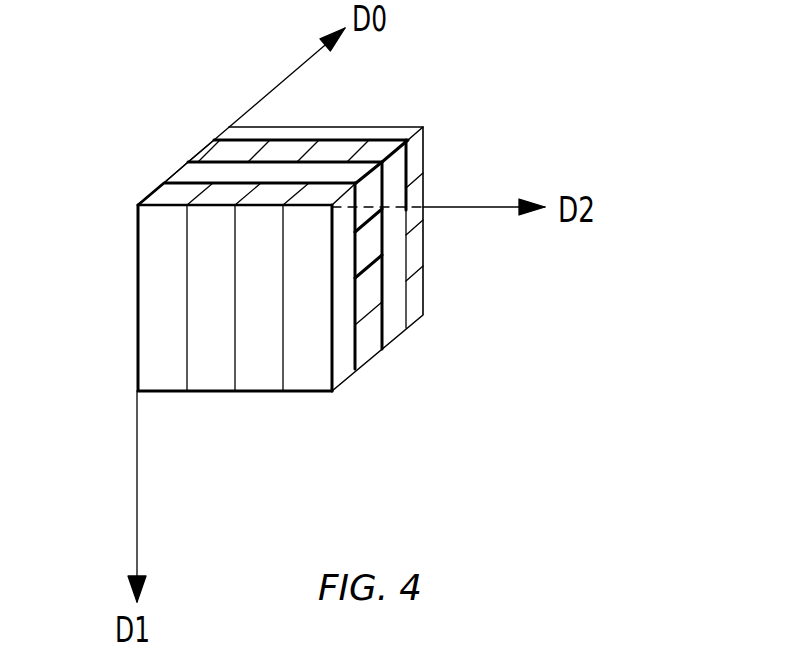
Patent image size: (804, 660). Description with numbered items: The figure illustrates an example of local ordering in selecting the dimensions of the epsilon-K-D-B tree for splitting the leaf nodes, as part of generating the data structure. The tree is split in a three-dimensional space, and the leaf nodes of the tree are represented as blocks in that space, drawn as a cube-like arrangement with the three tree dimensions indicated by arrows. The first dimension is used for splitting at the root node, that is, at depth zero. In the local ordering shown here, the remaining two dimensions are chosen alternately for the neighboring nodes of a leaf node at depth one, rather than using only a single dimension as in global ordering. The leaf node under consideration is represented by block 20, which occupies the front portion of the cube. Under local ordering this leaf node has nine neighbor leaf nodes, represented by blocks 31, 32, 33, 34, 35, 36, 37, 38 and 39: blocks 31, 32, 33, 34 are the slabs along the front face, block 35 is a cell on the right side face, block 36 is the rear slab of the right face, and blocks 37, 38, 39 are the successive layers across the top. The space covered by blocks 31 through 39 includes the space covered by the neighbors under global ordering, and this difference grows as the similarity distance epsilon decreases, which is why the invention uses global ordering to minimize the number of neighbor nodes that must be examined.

The block 20 is at (186, 176).
The block 31 is at (167, 383).
The block 32 is at (220, 383).
The block 33 is at (270, 383).
The block 34 is at (323, 383).
The block 35 is at (360, 251).
The block 36 is at (424, 128).
The block 37 is at (352, 128).
The block 38 is at (288, 138).
The block 39 is at (218, 139).